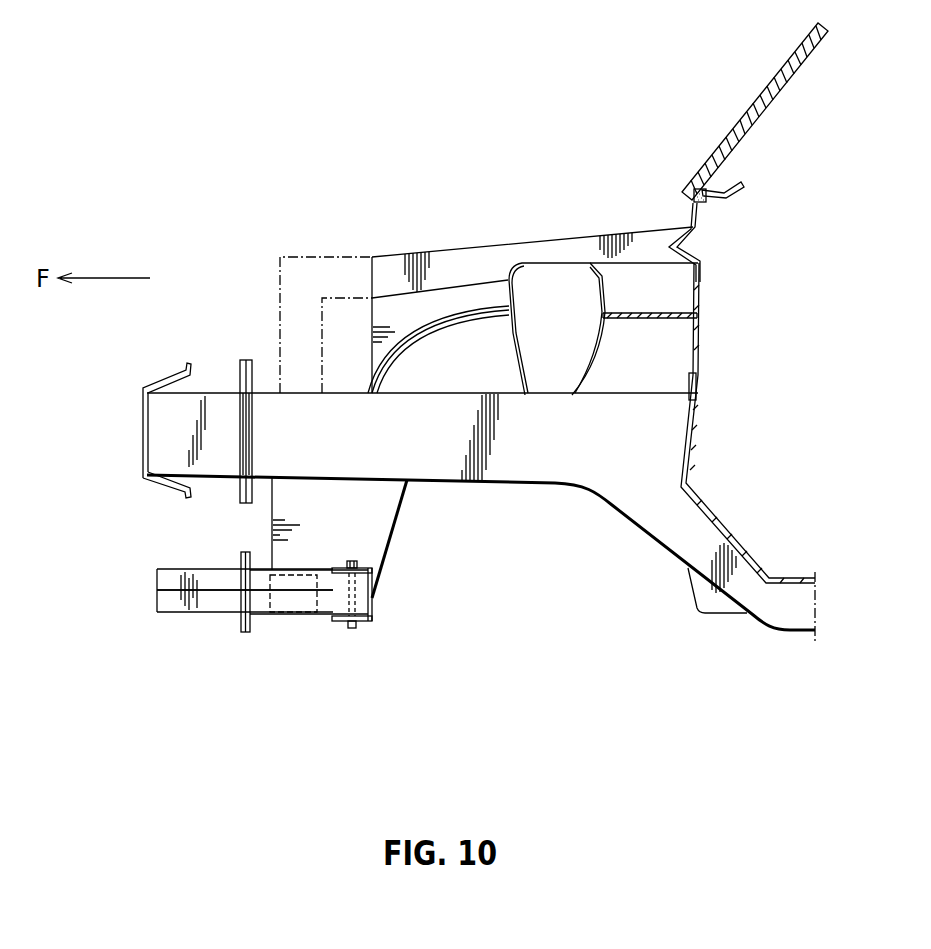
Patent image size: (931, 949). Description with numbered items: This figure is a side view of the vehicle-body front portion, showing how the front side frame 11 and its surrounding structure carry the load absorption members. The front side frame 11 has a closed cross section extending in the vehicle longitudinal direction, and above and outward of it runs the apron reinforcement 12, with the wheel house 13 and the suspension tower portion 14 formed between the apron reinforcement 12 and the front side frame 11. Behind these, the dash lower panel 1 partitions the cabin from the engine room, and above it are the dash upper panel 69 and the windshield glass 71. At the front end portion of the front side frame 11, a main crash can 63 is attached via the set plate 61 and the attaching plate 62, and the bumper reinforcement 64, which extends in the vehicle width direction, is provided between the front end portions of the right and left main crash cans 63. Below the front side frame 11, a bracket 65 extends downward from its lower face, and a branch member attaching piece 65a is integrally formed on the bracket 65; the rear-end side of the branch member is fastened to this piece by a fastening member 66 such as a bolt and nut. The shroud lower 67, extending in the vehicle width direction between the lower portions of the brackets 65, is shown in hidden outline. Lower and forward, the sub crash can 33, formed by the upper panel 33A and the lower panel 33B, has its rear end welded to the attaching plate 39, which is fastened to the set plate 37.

The dash lower panel 1 is at (698, 427).
The front side frame 11 is at (410, 440).
The apron reinforcement 12 is at (498, 242).
The wheel house 13 is at (458, 370).
The suspension tower portion 14 is at (540, 328).
The sub crash can 33 is at (162, 551).
The upper panel 33A is at (180, 578).
The lower panel 33B is at (168, 602).
The set plate 37 is at (250, 620).
The attaching plate 39 is at (238, 622).
The set plate 61 is at (252, 430).
The attaching plate 62 is at (242, 375).
The main crash can 63 is at (162, 412).
The bumper reinforcement 64 is at (142, 453).
The bracket 65 is at (377, 515).
The branch member attaching piece 65a is at (368, 568).
The fastening member 66 is at (352, 630).
The shroud lower 67 is at (300, 612).
The dash upper panel 69 is at (696, 228).
The windshield glass 71 is at (773, 83).